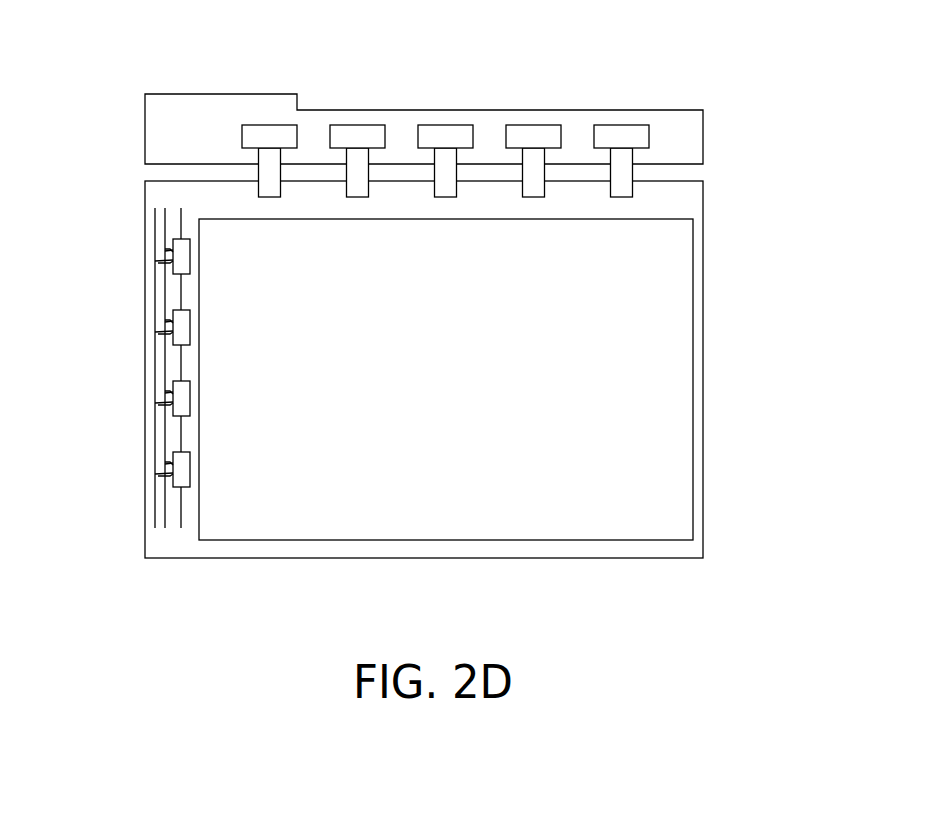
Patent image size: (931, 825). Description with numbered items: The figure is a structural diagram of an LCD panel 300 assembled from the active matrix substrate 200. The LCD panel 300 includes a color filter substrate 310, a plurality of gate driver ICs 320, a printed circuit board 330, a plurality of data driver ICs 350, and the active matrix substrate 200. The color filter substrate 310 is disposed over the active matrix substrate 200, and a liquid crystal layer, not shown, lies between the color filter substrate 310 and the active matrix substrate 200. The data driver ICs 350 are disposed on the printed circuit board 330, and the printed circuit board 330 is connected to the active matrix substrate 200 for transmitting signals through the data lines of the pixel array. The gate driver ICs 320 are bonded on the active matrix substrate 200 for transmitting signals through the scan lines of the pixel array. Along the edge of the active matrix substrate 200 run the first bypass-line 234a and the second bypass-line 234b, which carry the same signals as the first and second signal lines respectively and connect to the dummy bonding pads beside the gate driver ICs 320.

The active matrix substrate 200 is at (158, 538).
The first bypass-line 234a is at (172, 253).
The second bypass-line 234b is at (172, 272).
The LCD panel 300 is at (777, 677).
The color filter substrate 310 is at (665, 436).
The gate driver ICs 320 is at (172, 243).
The printed circuit board 330 is at (692, 138).
The data driver ICs 350 is at (445, 133).